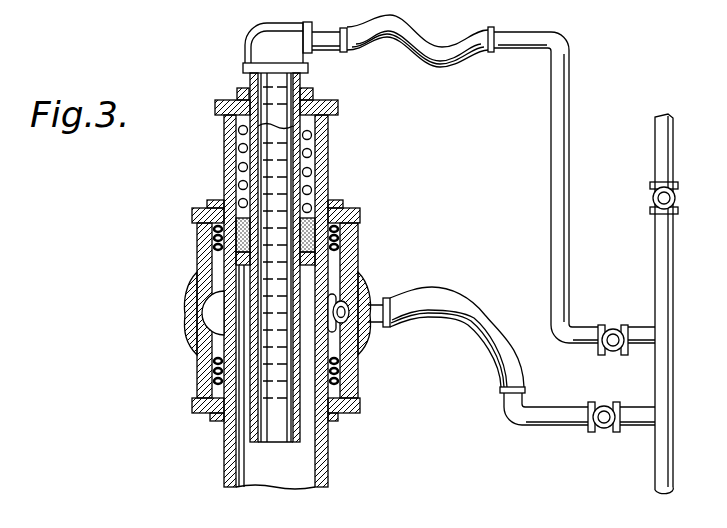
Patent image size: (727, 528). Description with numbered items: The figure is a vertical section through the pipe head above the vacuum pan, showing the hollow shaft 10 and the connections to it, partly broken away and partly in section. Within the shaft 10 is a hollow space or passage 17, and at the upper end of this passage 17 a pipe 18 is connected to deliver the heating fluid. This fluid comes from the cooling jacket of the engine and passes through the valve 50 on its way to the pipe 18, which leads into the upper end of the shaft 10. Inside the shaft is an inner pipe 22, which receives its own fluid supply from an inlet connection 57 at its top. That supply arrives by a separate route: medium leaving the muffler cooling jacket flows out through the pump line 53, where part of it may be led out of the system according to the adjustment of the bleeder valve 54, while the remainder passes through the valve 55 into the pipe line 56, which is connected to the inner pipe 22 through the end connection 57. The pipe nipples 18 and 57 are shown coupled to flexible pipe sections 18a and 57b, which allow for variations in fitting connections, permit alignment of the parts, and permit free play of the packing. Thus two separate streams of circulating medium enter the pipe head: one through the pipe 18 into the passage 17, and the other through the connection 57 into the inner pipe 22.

The shaft 10 is at (328, 458).
The passage 17 is at (248, 468).
The pipe 18 is at (378, 298).
The flexible pipe section 18a is at (478, 335).
The inner pipe 22 is at (253, 438).
The valve 50 is at (603, 430).
The pump line 53 is at (667, 475).
The bleeder valve 54 is at (656, 200).
The valve 55 is at (615, 327).
The pipe line 56 is at (569, 203).
The inlet connection 57 is at (362, 52).
The flexible pipe section 57b is at (452, 58).